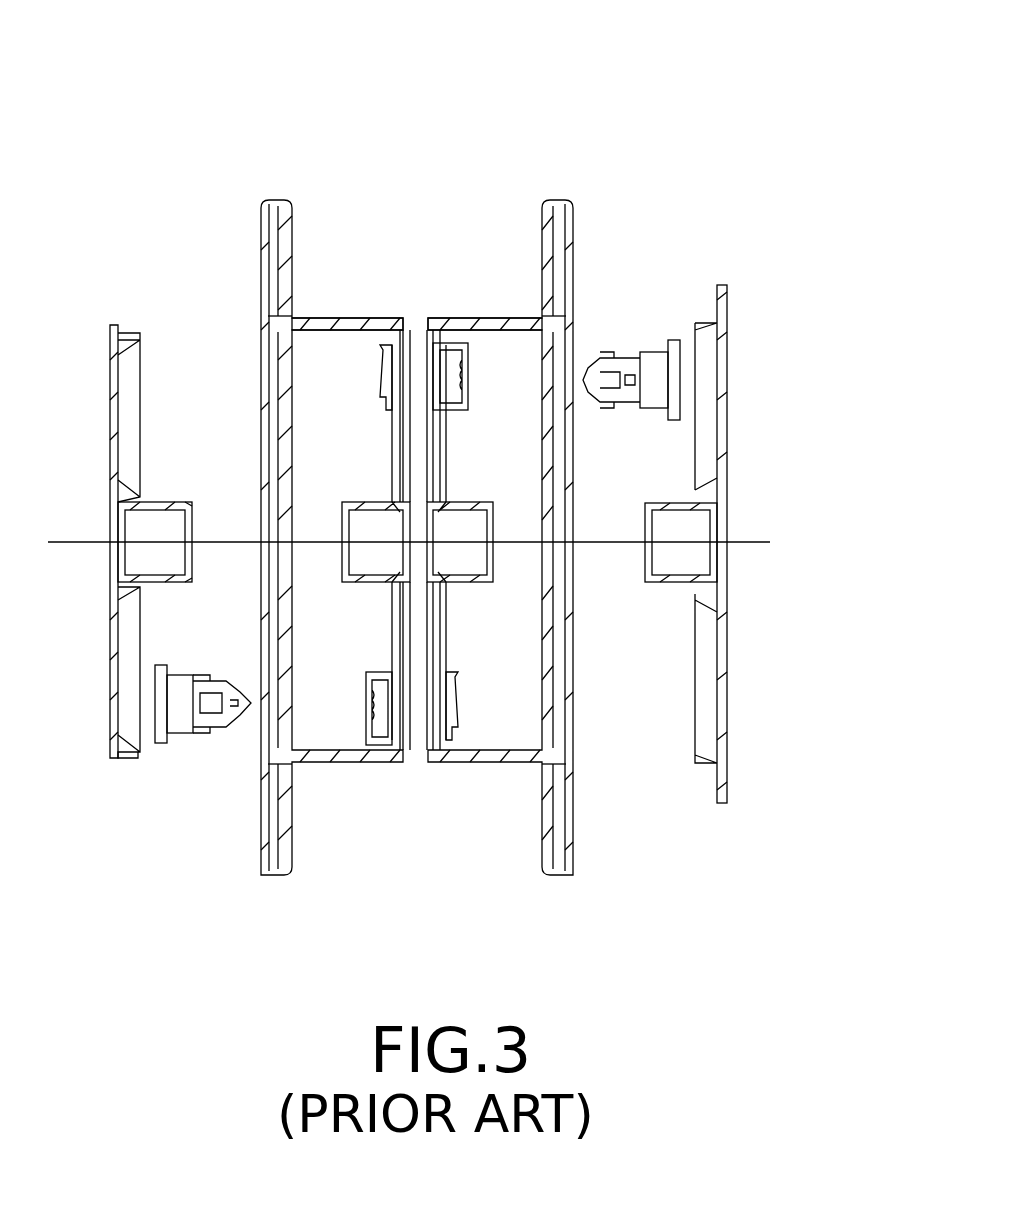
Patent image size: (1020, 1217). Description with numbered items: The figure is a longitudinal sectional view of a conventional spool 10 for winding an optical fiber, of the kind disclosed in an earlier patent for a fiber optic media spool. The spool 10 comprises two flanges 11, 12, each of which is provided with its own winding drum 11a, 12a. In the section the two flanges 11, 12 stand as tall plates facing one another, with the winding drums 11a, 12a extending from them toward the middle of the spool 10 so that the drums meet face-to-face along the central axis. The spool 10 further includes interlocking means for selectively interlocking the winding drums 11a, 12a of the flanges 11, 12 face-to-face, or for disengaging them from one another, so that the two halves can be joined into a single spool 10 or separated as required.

The spool 10 is at (693, 218).
The flange 11 is at (565, 200).
The winding drum 11a is at (457, 318).
The flange 12 is at (262, 200).
The winding drum 12a is at (345, 318).